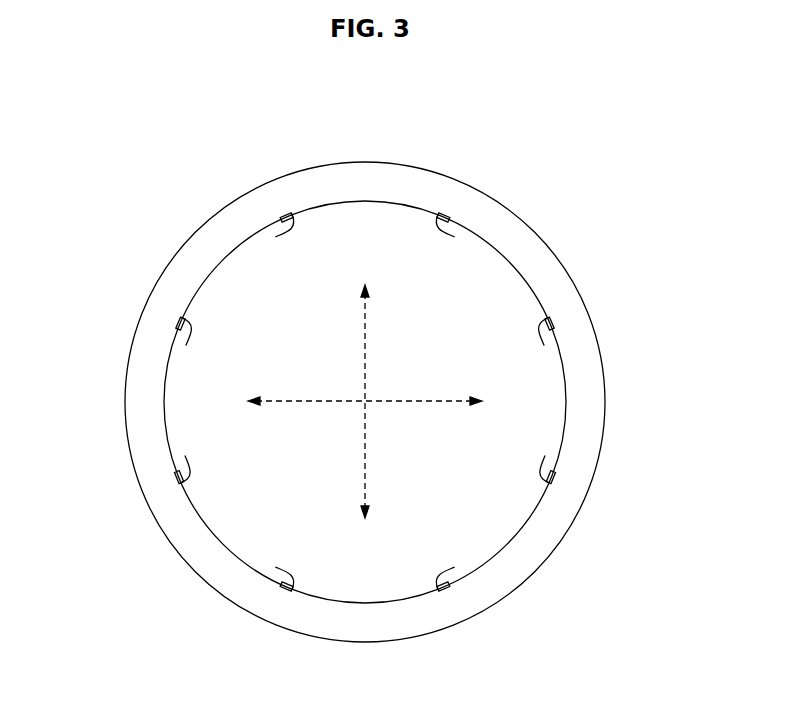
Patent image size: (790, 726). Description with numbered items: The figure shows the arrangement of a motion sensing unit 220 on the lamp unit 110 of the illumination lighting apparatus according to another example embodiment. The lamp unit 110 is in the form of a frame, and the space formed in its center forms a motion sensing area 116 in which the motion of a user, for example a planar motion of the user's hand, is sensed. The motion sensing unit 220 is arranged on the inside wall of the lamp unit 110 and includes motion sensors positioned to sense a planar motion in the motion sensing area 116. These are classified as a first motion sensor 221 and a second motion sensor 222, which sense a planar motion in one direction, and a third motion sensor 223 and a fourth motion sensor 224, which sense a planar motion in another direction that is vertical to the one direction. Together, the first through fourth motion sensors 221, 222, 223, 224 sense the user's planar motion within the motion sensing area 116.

The lamp unit 110 is at (571, 281).
The motion sensing area 116 is at (522, 378).
The motion sensing unit 220 is at (366, 440).
The first motion sensor 221 is at (186, 346).
The second motion sensor 222 is at (185, 455).
The third motion sensor 223 is at (275, 237).
The fourth motion sensor 224 is at (455, 237).